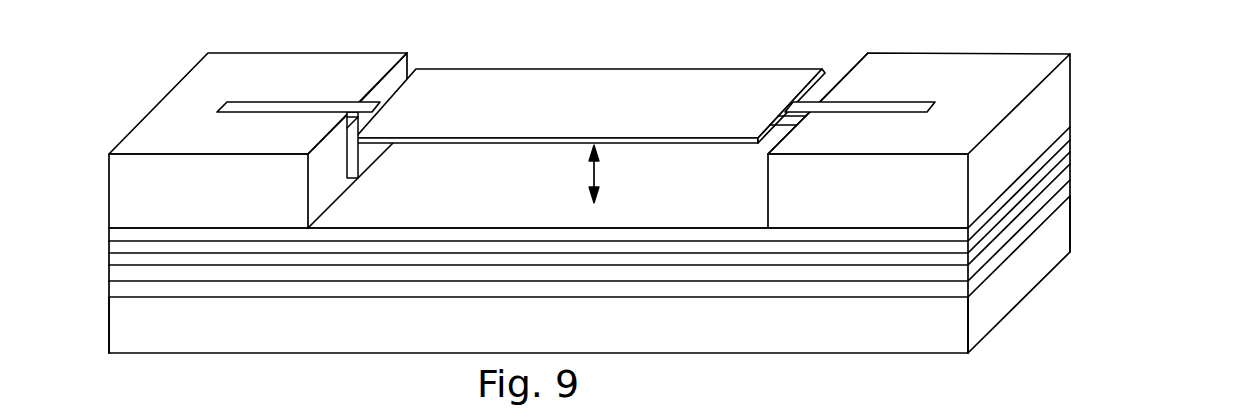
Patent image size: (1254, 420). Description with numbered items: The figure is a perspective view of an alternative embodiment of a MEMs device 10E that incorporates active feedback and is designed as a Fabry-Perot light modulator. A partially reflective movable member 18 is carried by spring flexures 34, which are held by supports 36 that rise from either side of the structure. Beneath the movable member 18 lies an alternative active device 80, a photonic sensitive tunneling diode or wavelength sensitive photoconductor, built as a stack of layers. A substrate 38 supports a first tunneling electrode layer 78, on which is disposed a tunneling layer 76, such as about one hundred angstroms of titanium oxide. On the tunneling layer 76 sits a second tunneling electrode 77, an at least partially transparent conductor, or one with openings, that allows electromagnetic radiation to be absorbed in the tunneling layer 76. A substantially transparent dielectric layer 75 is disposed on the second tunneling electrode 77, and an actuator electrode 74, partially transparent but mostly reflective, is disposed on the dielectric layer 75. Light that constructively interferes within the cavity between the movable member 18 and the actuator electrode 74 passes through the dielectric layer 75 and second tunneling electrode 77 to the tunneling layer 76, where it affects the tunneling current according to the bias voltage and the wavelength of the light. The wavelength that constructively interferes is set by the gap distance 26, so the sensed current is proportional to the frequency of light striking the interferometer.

The MEMs device 10E is at (1169, 165).
The movable member 18 is at (683, 69).
The gap distance 26 is at (590, 176).
The spring flexures 34 is at (273, 102).
The supports 36 is at (1072, 90).
The substrate 38 is at (1072, 222).
The actuator electrode 74 is at (1072, 121).
The dielectric layer 75 is at (1072, 137).
The tunneling layer 76 is at (1072, 168).
The second tunneling electrode 77 is at (1072, 148).
The first tunneling electrode layer 78 is at (1072, 185).
The active device 80 is at (690, 206).